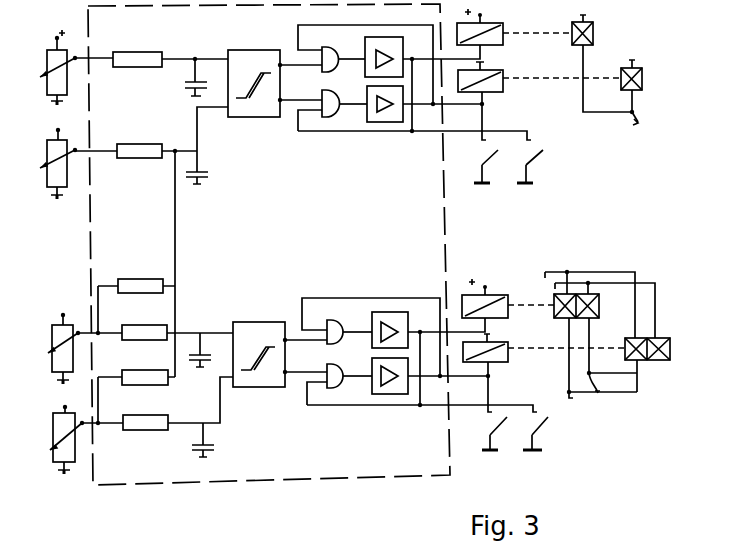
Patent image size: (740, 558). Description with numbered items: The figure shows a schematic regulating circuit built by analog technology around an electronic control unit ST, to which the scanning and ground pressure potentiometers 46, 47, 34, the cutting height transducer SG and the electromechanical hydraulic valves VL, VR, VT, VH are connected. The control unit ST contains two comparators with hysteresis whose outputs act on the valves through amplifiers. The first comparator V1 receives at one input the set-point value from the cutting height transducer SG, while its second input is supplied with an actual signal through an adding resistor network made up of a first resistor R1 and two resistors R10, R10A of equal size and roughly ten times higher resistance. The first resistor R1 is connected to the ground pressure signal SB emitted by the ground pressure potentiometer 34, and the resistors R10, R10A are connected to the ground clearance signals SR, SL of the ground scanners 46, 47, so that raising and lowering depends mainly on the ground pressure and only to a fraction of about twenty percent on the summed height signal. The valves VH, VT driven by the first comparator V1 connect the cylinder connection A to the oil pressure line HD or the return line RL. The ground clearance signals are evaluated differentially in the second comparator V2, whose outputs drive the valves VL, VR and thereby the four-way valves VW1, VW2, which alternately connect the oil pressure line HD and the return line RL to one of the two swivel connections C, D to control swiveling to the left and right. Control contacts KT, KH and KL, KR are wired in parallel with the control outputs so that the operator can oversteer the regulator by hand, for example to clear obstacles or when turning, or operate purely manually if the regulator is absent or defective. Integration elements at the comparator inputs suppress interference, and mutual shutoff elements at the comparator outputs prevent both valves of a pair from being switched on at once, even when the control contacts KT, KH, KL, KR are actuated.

The control unit ST is at (303, 208).
The cutting height transducer SG is at (57, 55).
The ground pressure potentiometer 34 is at (55, 152).
The ground pressure signal SB is at (101, 153).
The first resistor R1 is at (124, 146).
The first comparator V1 is at (264, 56).
The valve VT is at (487, 25).
The valve VH is at (502, 73).
The oil pressure line HD is at (585, 16).
The return line RL is at (633, 64).
The cylinder connection A is at (643, 130).
The control contact KH is at (482, 157).
The control contact KT is at (536, 157).
The resistor R10A is at (127, 288).
The ground clearance signal SR is at (103, 313).
The resistor R10 is at (124, 372).
The ground clearance signal SL is at (100, 403).
The ground scanner 46 is at (59, 324).
The ground scanner 47 is at (57, 413).
The second comparator V2 is at (273, 322).
The valve VL is at (512, 280).
The valve VR is at (522, 375).
The four-way valve VW1 is at (554, 304).
The four-way valve VW2 is at (659, 360).
The connection C is at (577, 363).
The connection D is at (612, 363).
The control contact KR is at (488, 433).
The control contact KL is at (547, 422).